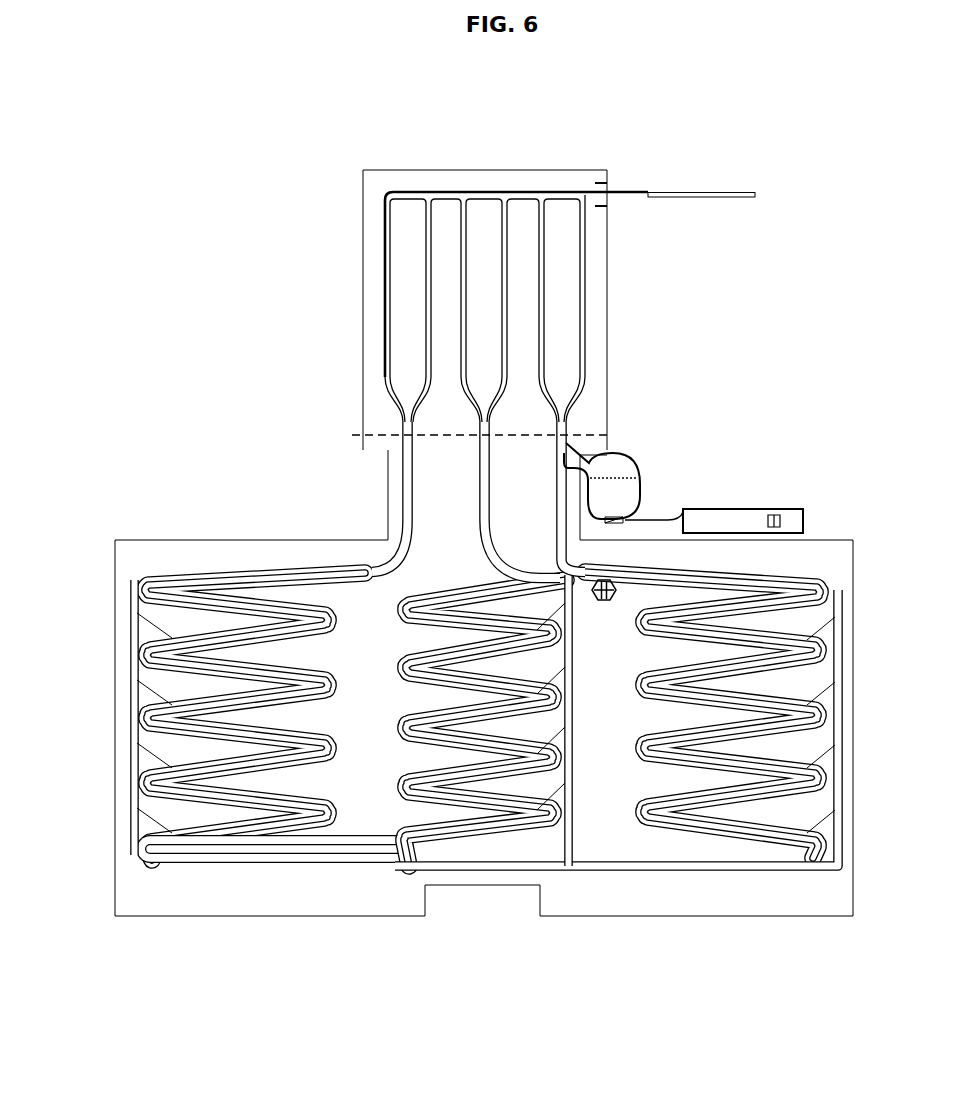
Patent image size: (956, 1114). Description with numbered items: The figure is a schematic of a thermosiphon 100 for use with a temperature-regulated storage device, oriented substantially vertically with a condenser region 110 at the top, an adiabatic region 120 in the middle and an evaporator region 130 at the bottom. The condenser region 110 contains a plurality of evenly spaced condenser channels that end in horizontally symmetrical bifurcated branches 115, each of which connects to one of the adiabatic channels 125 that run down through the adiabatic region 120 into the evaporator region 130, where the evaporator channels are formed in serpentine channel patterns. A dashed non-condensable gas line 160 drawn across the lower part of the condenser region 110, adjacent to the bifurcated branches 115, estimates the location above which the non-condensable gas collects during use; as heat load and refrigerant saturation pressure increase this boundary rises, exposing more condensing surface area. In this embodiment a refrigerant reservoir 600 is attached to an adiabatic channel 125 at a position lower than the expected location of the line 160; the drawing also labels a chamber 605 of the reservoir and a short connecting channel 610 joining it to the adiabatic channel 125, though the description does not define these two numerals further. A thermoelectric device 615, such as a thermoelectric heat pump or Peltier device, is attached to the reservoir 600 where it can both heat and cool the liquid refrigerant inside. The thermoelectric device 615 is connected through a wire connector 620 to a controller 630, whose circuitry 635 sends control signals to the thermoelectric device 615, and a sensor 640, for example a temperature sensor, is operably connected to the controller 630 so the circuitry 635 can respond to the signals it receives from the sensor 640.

The thermosiphon 100 is at (203, 230).
The condenser region 110 is at (348, 160).
The horizontally symmetrical bifurcated branches 115 is at (585, 416).
The adiabatic region 120 is at (348, 453).
The adiabatic channel 125 is at (398, 489).
The evaporator region 130 is at (116, 527).
The non-condensable gas line 160 is at (611, 437).
The refrigerant reservoir 600 is at (697, 492).
The trap chamber 605 is at (646, 477).
The inlet channel 610 is at (584, 443).
The thermoelectric device 615 is at (614, 526).
The wire connector 620 is at (658, 510).
The controller 630 is at (748, 504).
The circuitry 635 is at (788, 522).
The sensor 640 is at (603, 609).